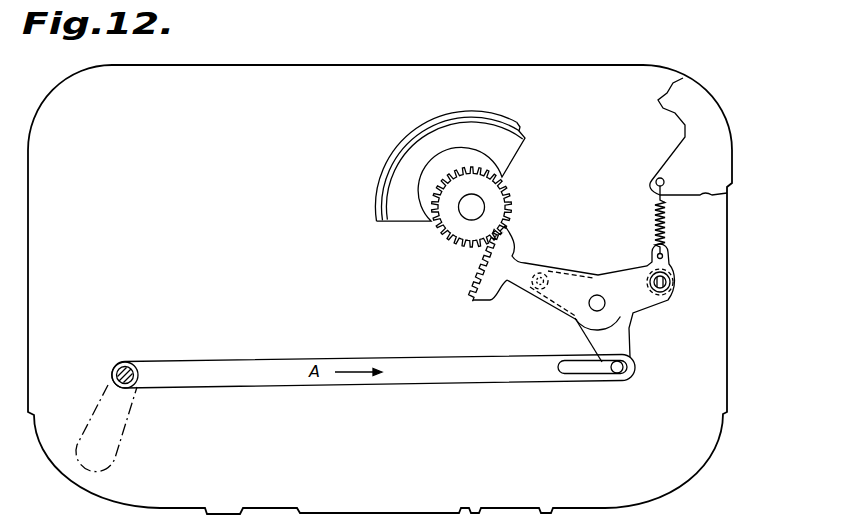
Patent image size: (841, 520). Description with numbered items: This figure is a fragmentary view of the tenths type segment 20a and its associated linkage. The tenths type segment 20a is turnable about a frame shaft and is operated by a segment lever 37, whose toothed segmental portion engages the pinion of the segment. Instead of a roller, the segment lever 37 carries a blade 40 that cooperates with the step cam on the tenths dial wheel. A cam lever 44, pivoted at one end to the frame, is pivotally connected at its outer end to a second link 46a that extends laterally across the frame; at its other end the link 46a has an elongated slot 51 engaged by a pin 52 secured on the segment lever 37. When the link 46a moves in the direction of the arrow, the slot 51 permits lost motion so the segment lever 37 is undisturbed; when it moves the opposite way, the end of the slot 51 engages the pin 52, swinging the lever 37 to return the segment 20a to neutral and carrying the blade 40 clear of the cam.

The tenths type segment 20a is at (394, 154).
The segment lever 37 is at (512, 243).
The blade 40 is at (672, 284).
The cam lever 44 is at (128, 418).
The second link 46a is at (268, 367).
The elongated slot 51 is at (582, 373).
The pin 52 is at (622, 368).